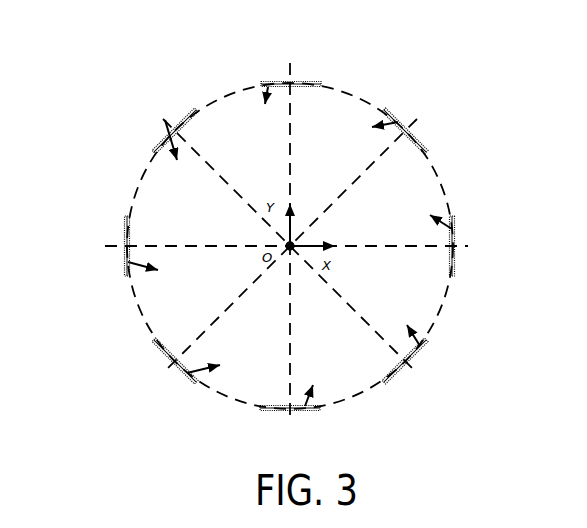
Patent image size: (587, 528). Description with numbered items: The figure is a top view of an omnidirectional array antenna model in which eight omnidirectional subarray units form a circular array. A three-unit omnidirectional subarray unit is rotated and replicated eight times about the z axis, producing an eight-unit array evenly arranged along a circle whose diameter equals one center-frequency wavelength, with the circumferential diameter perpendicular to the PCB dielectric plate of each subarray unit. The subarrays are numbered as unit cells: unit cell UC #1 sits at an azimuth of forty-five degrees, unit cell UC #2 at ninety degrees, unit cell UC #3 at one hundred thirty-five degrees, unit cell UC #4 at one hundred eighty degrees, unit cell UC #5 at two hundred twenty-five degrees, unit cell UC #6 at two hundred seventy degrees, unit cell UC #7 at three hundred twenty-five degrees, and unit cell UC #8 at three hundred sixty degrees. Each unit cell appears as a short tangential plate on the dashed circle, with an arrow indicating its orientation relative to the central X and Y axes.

The unit cell UC # 1 is at (412, 127).
The unit cell UC # 2 is at (282, 83).
The unit cell UC # 3 is at (148, 146).
The unit cell UC # 4 is at (114, 248).
The unit cell UC # 5 is at (169, 367).
The unit cell UC # 6 is at (300, 410).
The unit cell UC # 7 is at (432, 348).
The unit cell UC # 8 is at (467, 241).